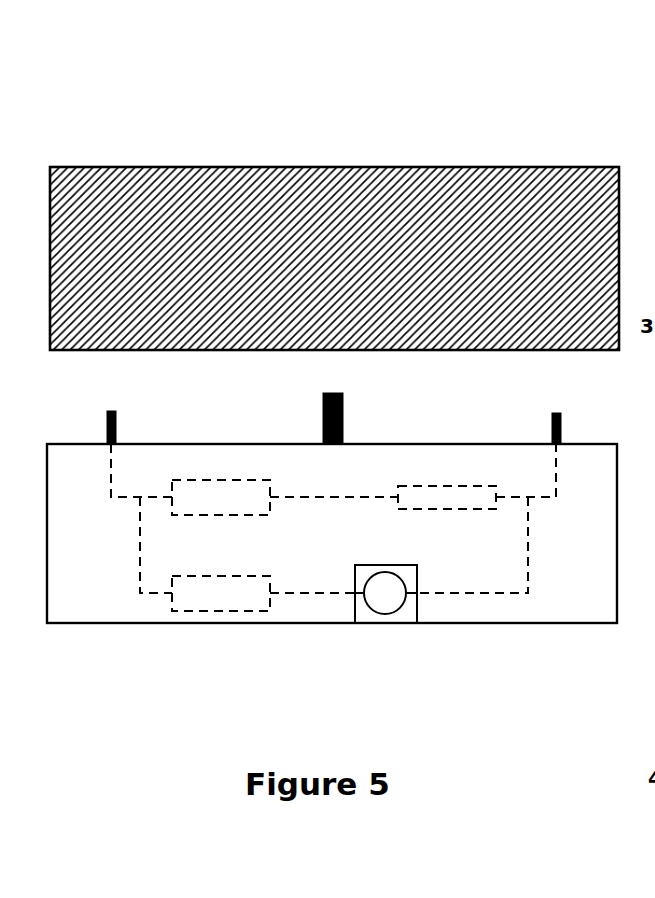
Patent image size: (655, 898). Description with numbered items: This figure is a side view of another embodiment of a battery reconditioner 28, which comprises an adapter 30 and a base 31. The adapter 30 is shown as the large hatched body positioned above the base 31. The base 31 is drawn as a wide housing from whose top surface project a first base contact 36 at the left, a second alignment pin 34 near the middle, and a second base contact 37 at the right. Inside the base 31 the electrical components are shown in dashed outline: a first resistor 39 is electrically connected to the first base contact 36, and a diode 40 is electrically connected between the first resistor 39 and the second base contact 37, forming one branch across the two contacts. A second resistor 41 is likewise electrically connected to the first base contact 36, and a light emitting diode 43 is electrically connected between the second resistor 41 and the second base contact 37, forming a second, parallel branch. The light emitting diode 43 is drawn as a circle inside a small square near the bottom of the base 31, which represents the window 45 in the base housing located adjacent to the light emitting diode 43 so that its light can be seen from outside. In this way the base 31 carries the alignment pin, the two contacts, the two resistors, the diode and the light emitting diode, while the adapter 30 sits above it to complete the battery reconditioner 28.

The battery reconditioner 28 is at (110, 76).
The adapter 30 is at (120, 167).
The base 31 is at (460, 632).
The second alignment pin 34 is at (344, 412).
The first base contact 36 is at (117, 420).
The second base contact 37 is at (562, 419).
The first resistor 39 is at (204, 480).
The diode 40 is at (437, 486).
The second resistor 41 is at (206, 612).
The light emitting diode 43 is at (378, 613).
The window 45 is at (355, 614).